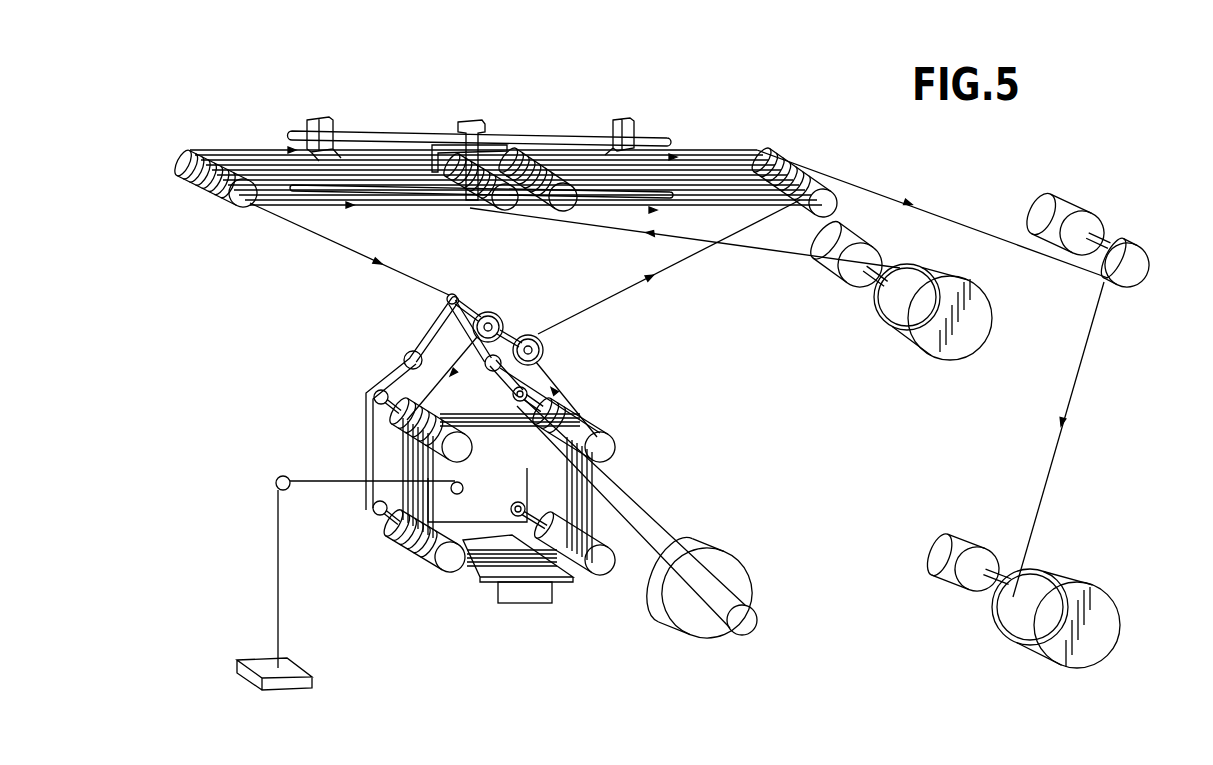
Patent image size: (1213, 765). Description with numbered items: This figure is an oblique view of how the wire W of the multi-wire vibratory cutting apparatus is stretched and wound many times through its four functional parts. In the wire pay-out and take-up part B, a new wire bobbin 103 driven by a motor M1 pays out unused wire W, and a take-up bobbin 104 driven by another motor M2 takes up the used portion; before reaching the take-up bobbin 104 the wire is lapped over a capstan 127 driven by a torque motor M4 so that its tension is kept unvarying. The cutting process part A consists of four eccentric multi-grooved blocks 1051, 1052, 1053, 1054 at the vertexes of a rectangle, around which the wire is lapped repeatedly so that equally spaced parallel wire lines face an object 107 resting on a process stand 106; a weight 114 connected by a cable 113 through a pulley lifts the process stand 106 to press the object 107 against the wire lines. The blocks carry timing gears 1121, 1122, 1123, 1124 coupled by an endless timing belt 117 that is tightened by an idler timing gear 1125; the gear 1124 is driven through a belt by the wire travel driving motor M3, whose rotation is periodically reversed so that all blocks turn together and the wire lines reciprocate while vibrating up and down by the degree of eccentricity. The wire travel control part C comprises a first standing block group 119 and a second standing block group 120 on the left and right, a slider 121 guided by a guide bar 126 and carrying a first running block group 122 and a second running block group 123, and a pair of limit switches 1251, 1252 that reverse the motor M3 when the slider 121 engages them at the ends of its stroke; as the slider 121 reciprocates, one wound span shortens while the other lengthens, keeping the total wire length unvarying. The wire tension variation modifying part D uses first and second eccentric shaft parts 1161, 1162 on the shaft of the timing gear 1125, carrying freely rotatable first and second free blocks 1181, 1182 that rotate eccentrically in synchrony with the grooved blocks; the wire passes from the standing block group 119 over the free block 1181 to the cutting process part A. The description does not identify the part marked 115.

The new wire bobbin 103 is at (920, 342).
The take-up bobbin 104 is at (1103, 600).
The eccentric multi-grooved block 1051 is at (440, 563).
The eccentric multi-grooved block 1052 is at (597, 570).
The eccentric multi-grooved block 1053 is at (460, 452).
The eccentric multi-grooved block 1054 is at (607, 447).
The process stand 106 is at (507, 603).
The object to be processed 107 is at (483, 582).
The timing gear 1121 is at (367, 515).
The timing gear 1122 is at (513, 509).
The timing gear 1123 is at (380, 392).
The timing gear 1124 is at (526, 392).
The idler timing gear 1125 is at (448, 294).
The cable 113 is at (308, 480).
The weight 114 is at (287, 668).
The pivot 115 is at (411, 352).
The first eccentric shaft part 1161 is at (490, 326).
The second eccentric shaft part 1162 is at (530, 349).
The endless timing belt 117 is at (438, 318).
The first free block 1181 is at (472, 312).
The second free block 1182 is at (520, 332).
The first standing block group 119 is at (245, 205).
The second standing block group 120 is at (833, 203).
The slider 121 is at (480, 133).
The first running block group 122 is at (501, 208).
The second running block group 123 is at (563, 206).
The limit switch 1251 is at (343, 104).
The limit switch 1252 is at (627, 122).
The guide bar 126 is at (402, 131).
The capstan 127 is at (1140, 260).
The motor M1 is at (847, 270).
The motor M2 is at (950, 533).
The wire travel driving motor M3 is at (737, 580).
The torque motor M4 is at (1073, 213).
The wire W is at (325, 241).
The cutting process part A is at (700, 383).
The wire pay-out and take-up part B is at (1118, 308).
The wire travel control part C is at (769, 88).
The wire tension variation modifying part D is at (612, 313).